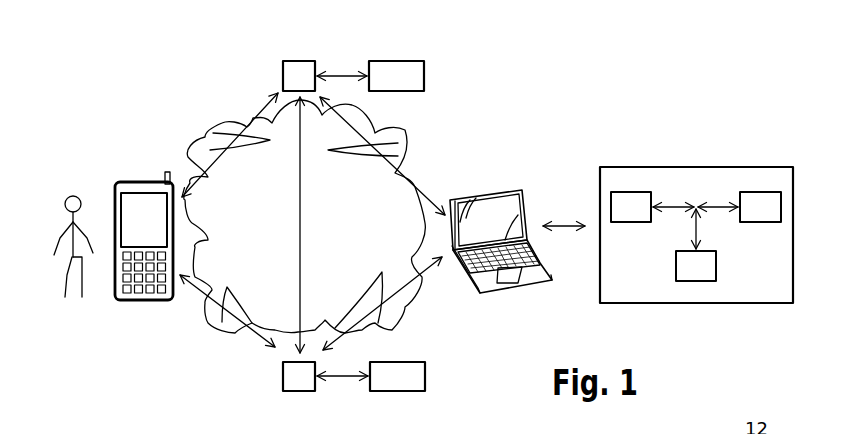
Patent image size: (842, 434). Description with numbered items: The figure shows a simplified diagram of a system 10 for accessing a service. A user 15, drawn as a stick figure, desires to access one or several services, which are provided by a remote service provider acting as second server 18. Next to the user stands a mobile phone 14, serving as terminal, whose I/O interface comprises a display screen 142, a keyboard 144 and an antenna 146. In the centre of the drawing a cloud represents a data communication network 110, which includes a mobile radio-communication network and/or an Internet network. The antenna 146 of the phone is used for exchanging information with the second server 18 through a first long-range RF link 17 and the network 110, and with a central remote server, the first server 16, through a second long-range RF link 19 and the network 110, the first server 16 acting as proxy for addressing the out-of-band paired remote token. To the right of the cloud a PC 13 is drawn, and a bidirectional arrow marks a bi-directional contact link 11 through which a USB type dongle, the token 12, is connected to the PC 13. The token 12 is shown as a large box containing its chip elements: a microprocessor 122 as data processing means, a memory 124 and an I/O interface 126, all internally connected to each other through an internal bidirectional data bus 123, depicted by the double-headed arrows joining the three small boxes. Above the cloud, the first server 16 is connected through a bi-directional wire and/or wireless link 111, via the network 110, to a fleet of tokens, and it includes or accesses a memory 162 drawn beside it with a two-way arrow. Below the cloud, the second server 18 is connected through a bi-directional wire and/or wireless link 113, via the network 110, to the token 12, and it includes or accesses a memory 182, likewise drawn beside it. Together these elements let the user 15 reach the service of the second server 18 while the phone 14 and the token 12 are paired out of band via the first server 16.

The system for accessing a service 10 is at (175, 88).
The bi-directional contact link 11 is at (565, 226).
The USB type dongle 12 is at (679, 238).
The PC 13 is at (487, 197).
The mobile phone 14 is at (125, 236).
The user 15 is at (72, 197).
The central remote server 16 is at (296, 72).
The memory 162 is at (412, 77).
The first long-range RF link 17 is at (253, 323).
The remote service provider 18 is at (300, 378).
The memory 182 is at (393, 383).
The second long-range RF link 19 is at (235, 123).
The data communication network 110 is at (207, 330).
The bi-directional wire and/or wireless link 111 is at (417, 162).
The bi-directional wire and/or wireless link 113 is at (433, 278).
The microprocessor 122 is at (632, 192).
The internal bidirectional data bus 123 is at (670, 203).
The memory 124 is at (758, 192).
The I/O interface 126 is at (690, 281).
The display screen 142 is at (127, 237).
The keyboard 144 is at (139, 290).
The antenna 146 is at (167, 172).